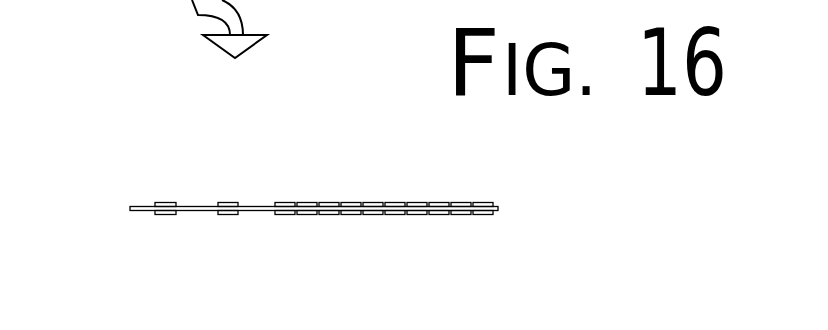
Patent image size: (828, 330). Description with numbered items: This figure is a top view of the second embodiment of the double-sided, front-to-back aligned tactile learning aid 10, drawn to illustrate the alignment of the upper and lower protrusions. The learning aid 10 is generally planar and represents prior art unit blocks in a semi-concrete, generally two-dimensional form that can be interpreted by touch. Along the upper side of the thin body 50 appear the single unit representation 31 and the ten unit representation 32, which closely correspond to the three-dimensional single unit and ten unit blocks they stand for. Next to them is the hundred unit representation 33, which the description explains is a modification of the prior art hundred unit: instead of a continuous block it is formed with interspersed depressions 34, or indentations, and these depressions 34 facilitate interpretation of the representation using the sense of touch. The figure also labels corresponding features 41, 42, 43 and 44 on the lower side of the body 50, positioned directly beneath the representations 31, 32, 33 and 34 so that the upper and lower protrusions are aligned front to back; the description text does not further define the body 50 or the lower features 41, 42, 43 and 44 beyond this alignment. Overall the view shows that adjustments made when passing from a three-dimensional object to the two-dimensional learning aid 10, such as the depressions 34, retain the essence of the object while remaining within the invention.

The double-sided, front-to-back aligned tactile learning aid 10 is at (89, 82).
The substrate strip 50 is at (130, 207).
The single unit representation 31 is at (164, 202).
The ten unit representation 32 is at (230, 202).
The hundred unit representation 33 is at (327, 203).
The depressions 34 is at (427, 205).
The first lower electrode pad 41 is at (165, 213).
The second lower electrode pad 42 is at (228, 213).
The lower electrode pad array 43 is at (330, 214).
The lower electrode pad array 44 is at (428, 214).